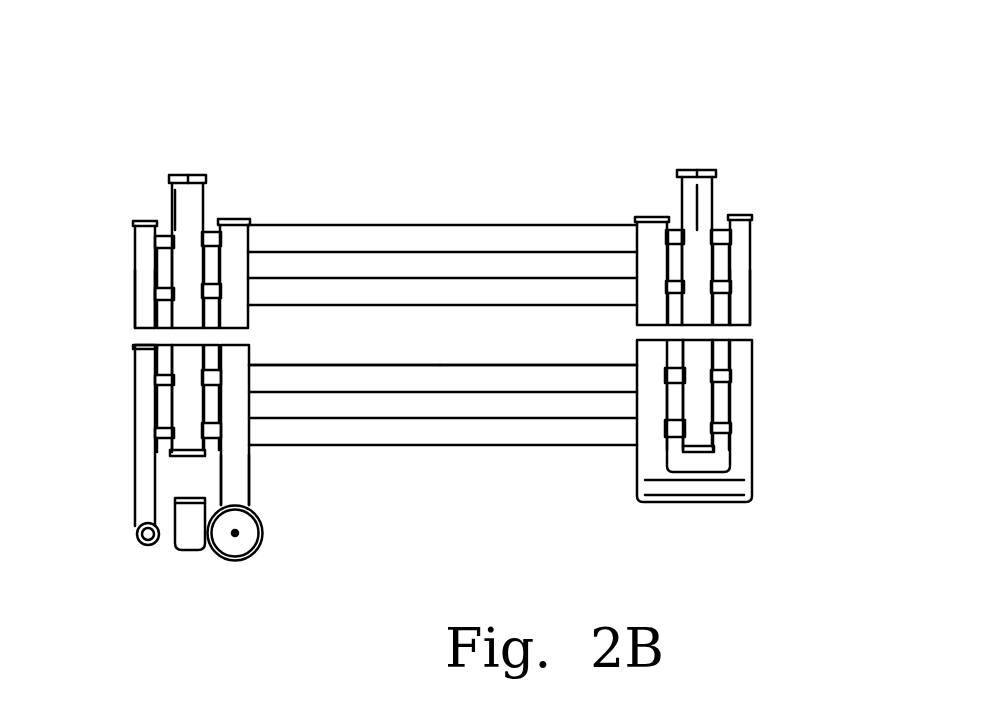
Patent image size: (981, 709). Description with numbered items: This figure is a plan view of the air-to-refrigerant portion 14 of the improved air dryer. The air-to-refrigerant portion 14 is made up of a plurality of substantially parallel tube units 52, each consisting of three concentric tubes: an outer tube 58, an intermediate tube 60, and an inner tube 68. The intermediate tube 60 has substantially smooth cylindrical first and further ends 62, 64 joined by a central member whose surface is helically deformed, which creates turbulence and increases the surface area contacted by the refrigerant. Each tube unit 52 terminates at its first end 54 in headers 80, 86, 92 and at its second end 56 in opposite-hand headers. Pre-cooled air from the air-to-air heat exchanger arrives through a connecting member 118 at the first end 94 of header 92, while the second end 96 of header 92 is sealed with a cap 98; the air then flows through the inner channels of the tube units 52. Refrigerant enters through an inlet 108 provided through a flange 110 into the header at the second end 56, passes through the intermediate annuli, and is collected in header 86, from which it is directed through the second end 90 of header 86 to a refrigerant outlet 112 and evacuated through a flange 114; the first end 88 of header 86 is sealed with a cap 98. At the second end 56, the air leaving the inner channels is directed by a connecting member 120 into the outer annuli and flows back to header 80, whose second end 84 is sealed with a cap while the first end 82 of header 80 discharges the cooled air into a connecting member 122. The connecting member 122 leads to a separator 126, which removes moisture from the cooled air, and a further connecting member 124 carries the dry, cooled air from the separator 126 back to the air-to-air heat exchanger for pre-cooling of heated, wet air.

The air-to-refrigerant portion 14 is at (387, 67).
The tube units 52 is at (462, 307).
The first end 54 is at (276, 360).
The second end 56 is at (604, 362).
The outer tube 58 is at (418, 224).
The intermediate tube 60 is at (212, 232).
The first end of intermediate tube 62 is at (207, 398).
The further end of intermediate tube 64 is at (672, 230).
The inner tube 68 is at (160, 238).
The header 80 is at (235, 452).
The first end of header 80 82 is at (288, 500).
The second end of header 80 84 is at (233, 241).
The header 86 is at (105, 216).
The first end of header 86 88 is at (116, 426).
The second end of header 86 90 is at (124, 150).
The header 92 is at (92, 294).
The first end of header 92 94 is at (91, 448).
The second end of header 92 96 is at (93, 274).
The cap 98 is at (142, 221).
The inlet 108 is at (690, 169).
The flange 110 is at (697, 197).
The refrigerant outlet 112 is at (178, 174).
The flange 114 is at (202, 173).
The connecting member 118 is at (140, 542).
The connecting member 120 is at (688, 490).
The connecting member 122 is at (237, 493).
The connecting member 124 is at (185, 537).
The separator 126 is at (250, 560).